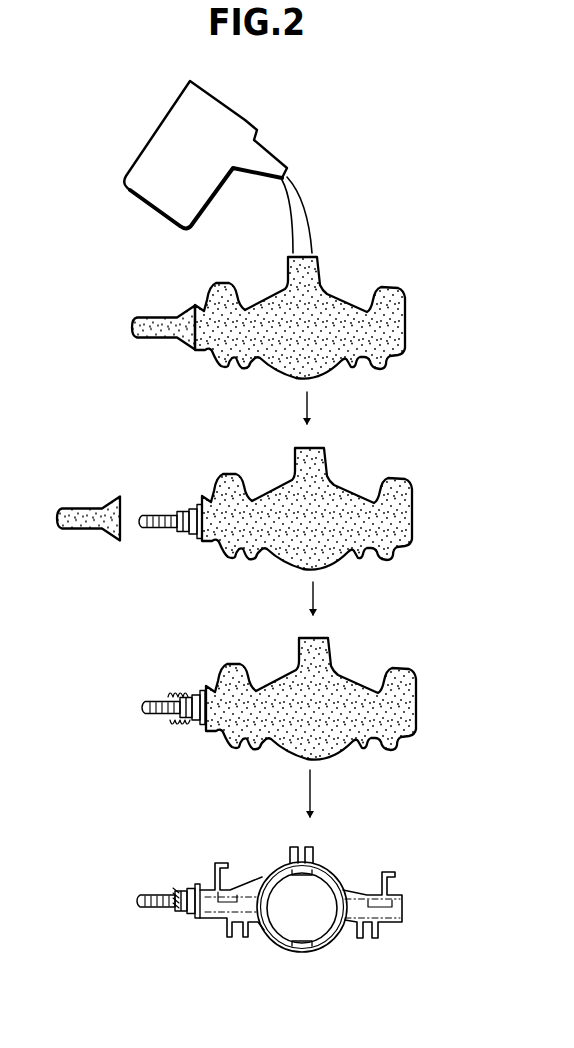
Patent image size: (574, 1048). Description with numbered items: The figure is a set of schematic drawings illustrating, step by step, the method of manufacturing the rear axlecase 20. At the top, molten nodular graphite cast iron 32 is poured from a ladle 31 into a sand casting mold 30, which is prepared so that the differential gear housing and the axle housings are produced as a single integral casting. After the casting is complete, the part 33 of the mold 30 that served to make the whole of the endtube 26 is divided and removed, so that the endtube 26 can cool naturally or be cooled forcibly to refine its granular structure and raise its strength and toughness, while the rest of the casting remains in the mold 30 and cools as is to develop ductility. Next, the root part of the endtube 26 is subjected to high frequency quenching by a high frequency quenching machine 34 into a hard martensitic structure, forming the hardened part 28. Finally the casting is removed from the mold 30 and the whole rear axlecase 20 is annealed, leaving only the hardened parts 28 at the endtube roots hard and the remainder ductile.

The rear axlecase 20 is at (260, 867).
The endtube 26 is at (150, 513).
The hardened part 28 is at (172, 893).
The sand casting mold 30 is at (333, 293).
The ladle 31 is at (247, 122).
The molten nodular graphite cast iron 32 is at (302, 217).
The part of the mold 33 is at (158, 310).
The high frequency quenching machine 34 is at (185, 690).